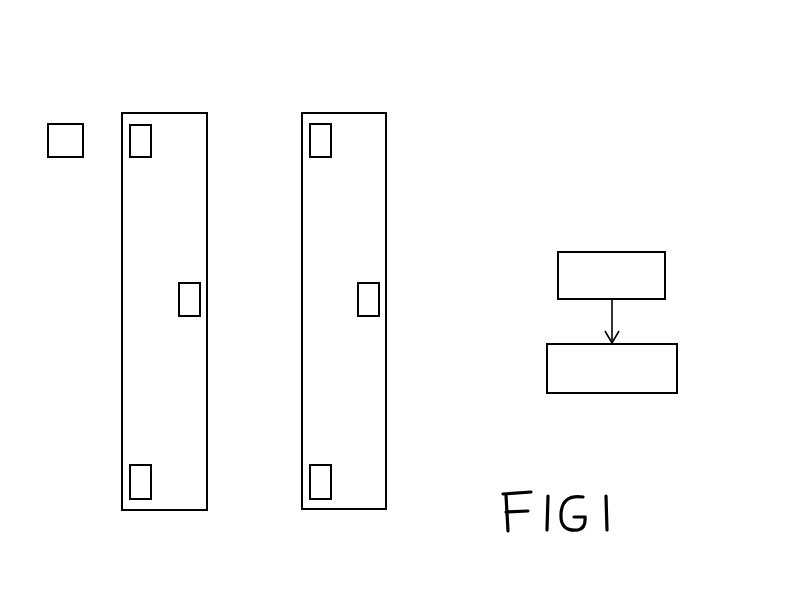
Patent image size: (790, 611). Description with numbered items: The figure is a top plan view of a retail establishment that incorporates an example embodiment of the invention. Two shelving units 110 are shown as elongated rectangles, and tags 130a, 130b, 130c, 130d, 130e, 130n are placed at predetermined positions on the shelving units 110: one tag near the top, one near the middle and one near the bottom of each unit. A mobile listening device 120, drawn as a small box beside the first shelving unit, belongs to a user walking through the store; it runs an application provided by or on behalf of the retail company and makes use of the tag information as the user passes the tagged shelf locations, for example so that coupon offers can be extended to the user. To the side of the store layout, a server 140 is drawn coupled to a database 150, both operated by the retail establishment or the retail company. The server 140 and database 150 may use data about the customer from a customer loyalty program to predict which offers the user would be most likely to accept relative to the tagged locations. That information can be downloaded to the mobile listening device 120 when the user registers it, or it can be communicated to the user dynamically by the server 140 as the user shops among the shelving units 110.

The shelving units 110 is at (190, 113).
The mobile listening device 120 is at (62, 120).
The tag 130a is at (140, 124).
The tag 130b is at (188, 283).
The tag 130c is at (137, 499).
The tag 130d is at (319, 124).
The tag 130e is at (368, 283).
The tag 130n is at (320, 499).
The server 140 is at (627, 252).
The database 150 is at (652, 393).